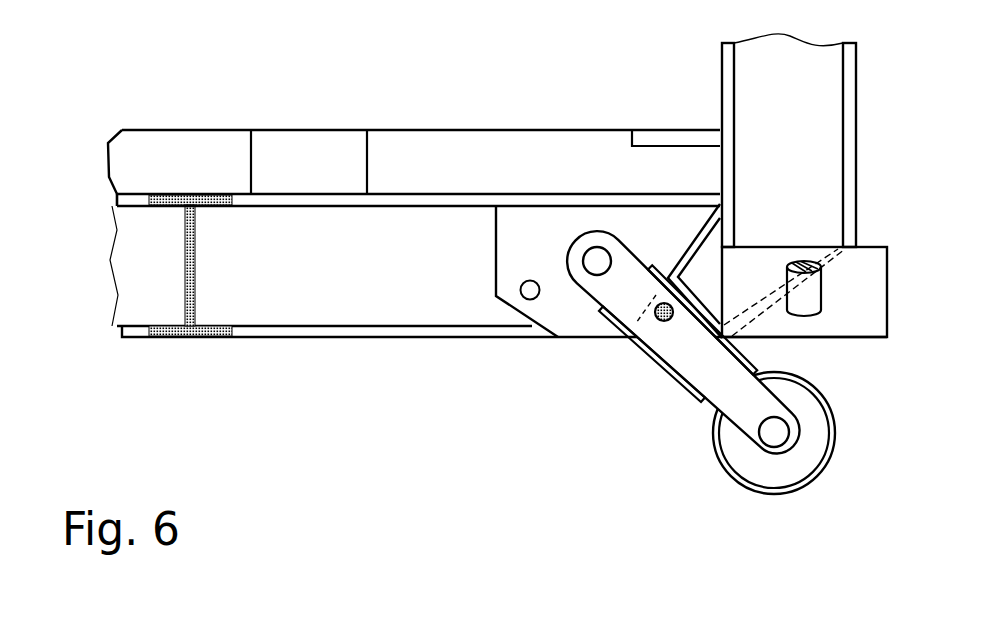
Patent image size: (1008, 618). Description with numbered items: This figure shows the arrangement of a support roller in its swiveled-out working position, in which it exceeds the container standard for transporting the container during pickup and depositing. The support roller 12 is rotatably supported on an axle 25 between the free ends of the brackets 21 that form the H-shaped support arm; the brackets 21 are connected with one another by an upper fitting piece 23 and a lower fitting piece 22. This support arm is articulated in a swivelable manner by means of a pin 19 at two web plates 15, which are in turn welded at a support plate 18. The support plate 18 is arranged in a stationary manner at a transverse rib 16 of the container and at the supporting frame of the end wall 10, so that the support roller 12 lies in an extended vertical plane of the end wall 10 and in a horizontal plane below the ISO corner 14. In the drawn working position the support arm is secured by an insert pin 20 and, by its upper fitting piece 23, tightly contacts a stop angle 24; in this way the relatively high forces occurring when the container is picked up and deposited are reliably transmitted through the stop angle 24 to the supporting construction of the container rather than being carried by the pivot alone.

The end wall 10 is at (762, 133).
The support roller 12 is at (830, 449).
The ISO corner 14 is at (778, 322).
The web plate 15 is at (507, 263).
The transverse rib 16 is at (252, 155).
The support plate 18 is at (413, 203).
The pin 19 is at (590, 268).
The insert pin 20 is at (633, 330).
The bracket 21 is at (702, 392).
The lower fitting piece 22 is at (655, 322).
The upper fitting piece 23 is at (703, 328).
The stop angle 24 is at (673, 262).
The axle 25 is at (772, 438).